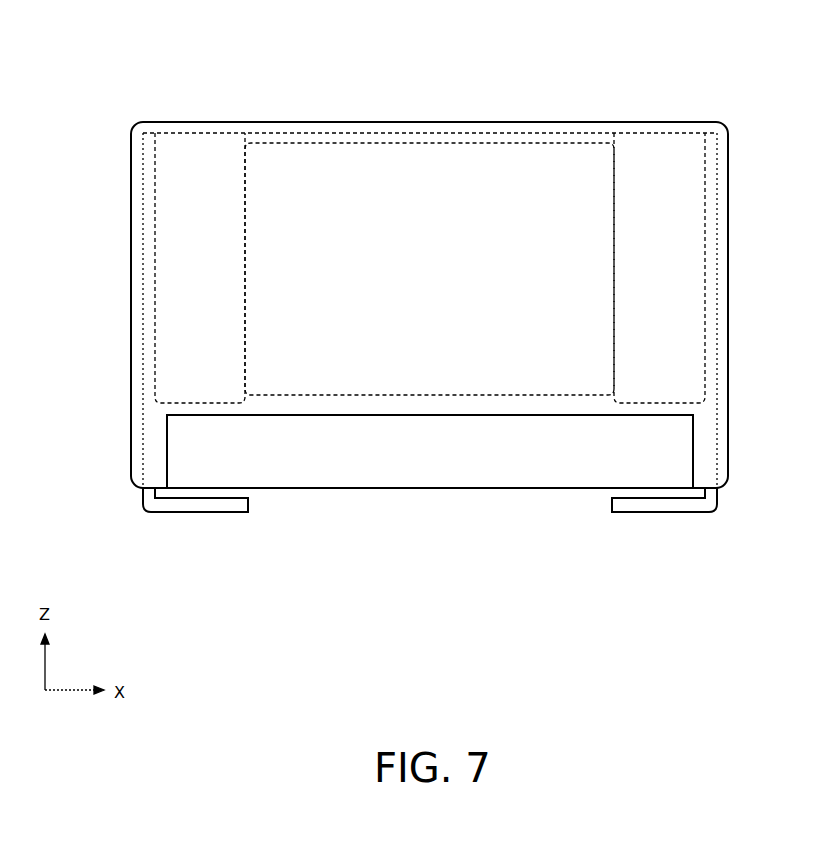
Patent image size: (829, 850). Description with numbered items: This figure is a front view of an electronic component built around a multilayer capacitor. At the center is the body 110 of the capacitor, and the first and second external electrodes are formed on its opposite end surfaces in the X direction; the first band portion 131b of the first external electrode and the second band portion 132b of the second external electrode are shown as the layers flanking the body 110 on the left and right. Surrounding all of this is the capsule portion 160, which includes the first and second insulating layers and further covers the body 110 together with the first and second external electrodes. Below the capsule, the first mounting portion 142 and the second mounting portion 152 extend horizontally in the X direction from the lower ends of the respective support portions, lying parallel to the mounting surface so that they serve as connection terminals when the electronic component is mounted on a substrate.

The body 110 is at (302, 168).
The first band portion 131b is at (198, 168).
The second band portion 132b is at (658, 168).
The capsule portion 160 is at (446, 122).
The first mounting portion 142 is at (202, 507).
The second mounting portion 152 is at (660, 507).